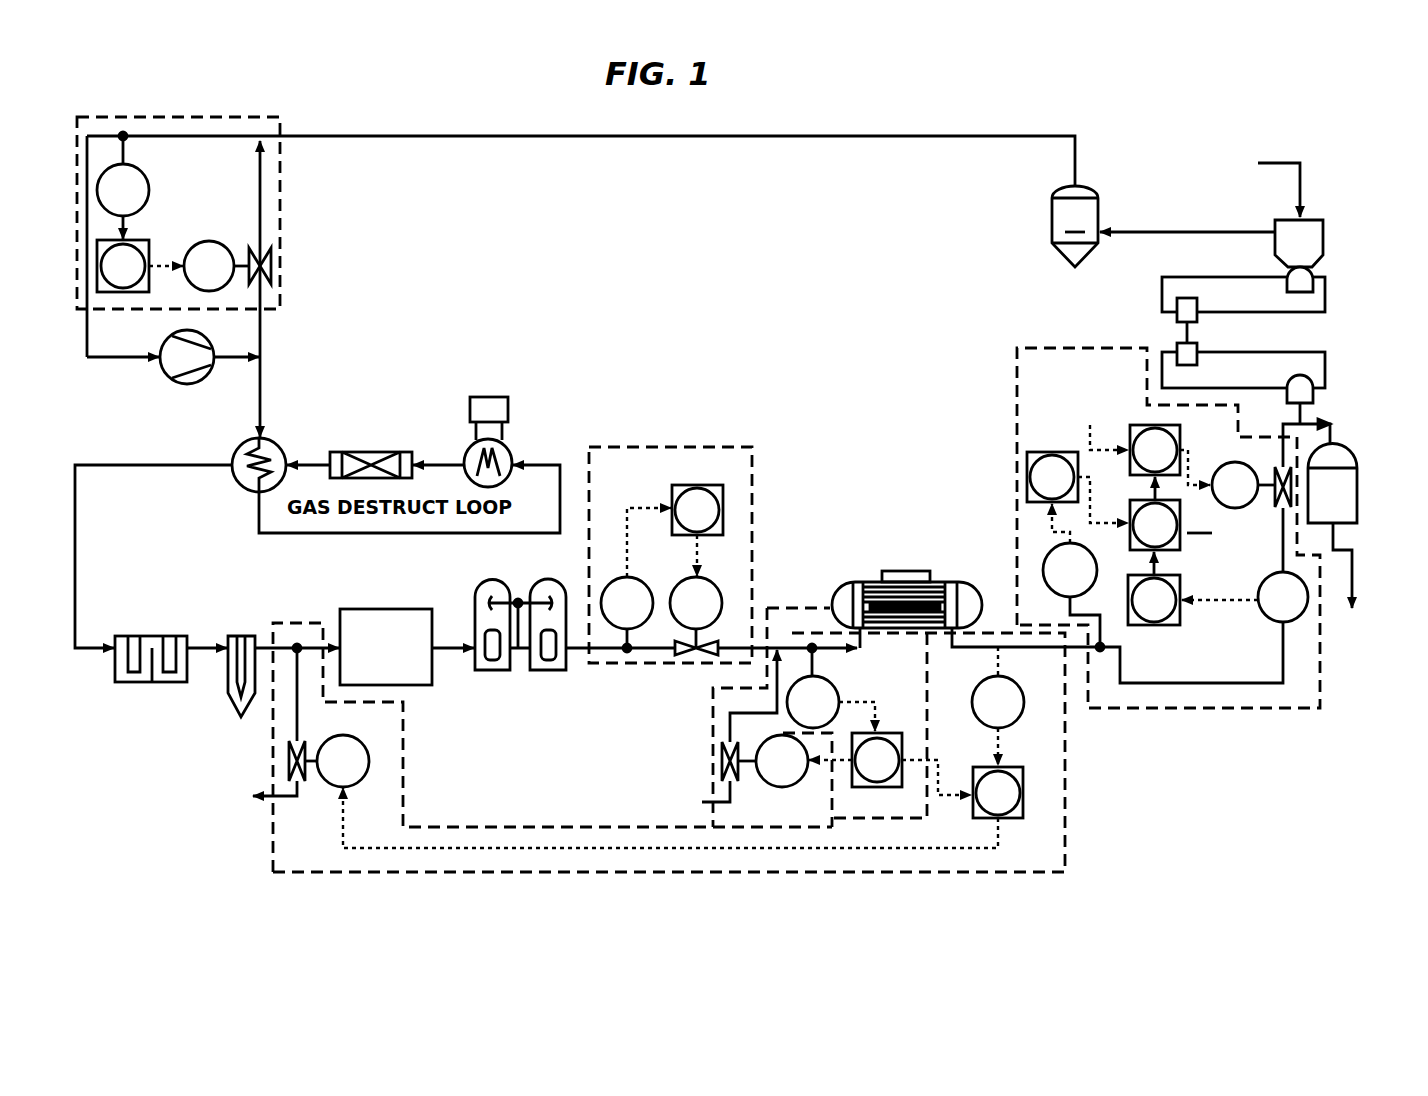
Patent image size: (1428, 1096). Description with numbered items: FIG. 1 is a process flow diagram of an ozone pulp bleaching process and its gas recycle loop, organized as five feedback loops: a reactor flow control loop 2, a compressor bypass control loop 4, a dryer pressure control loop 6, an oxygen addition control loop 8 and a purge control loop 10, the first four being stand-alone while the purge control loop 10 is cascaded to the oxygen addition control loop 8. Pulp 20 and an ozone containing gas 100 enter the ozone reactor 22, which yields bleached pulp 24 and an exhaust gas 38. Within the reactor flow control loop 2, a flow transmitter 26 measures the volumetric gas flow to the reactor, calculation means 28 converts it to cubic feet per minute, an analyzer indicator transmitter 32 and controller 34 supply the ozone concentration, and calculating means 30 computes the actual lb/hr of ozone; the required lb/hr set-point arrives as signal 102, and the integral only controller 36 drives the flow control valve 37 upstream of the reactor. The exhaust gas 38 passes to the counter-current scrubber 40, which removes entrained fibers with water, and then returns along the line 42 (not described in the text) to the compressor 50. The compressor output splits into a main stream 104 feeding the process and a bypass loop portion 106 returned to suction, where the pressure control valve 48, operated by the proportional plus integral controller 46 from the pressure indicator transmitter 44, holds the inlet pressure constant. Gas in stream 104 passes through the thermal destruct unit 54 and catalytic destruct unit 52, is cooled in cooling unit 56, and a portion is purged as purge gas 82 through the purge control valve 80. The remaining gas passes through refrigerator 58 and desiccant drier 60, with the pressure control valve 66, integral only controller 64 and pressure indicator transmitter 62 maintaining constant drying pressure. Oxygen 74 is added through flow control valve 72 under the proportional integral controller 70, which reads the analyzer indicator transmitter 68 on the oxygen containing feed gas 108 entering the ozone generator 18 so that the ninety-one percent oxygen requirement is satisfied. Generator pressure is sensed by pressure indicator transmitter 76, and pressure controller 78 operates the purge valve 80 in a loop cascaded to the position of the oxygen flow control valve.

The reactor flow control loop 2 is at (1077, 348).
The compressor bypass control loop 4 is at (283, 270).
The dryer pressure control loop 6 is at (768, 471).
The oxygen addition control loop 8 is at (785, 601).
The purge control loop 10 is at (1067, 777).
The ozone generator 18 is at (832, 580).
The pulp 20 is at (1302, 193).
The ozone reactor 22 is at (1294, 322).
The bleached pulp 24 is at (1353, 580).
The flow transmitter 26 is at (1267, 580).
The calculation means 28 is at (1180, 612).
The calculating means 30 is at (1130, 507).
The analyzer indicator transmitter 32 is at (1089, 557).
The controller 34 is at (1040, 502).
The integral only controller 36 is at (1180, 427).
The flow control valve 37 is at (1233, 508).
The exhaust gas 38 is at (1150, 232).
The counter-current scrubber 40 is at (1014, 226).
The recycle gas line 42 is at (697, 136).
The pressure indicator transmitter 44 is at (149, 194).
The proportional plus integral controller 46 is at (137, 292).
The pressure control valve 48 is at (213, 242).
The compressor 50 is at (173, 369).
The catalytic destruct unit 52 is at (362, 452).
The thermal destruct unit 54 is at (489, 397).
The cooling unit 56 is at (125, 682).
The refrigerator 58 is at (373, 609).
The desiccant drier 60 is at (490, 580).
The pressure indicator transmitter 62 is at (650, 565).
The integral only controller 64 is at (714, 485).
The pressure control valve 66 is at (713, 582).
The analyzer indicator transmitter 68 is at (836, 686).
The proportional integral controller 70 is at (887, 733).
The flow control valve 72 is at (790, 787).
The oxygen supply 74 is at (678, 731).
The pressure indicator transmitter 76 is at (1017, 686).
The pressure controller 78 is at (1012, 767).
The purge control valve 80 is at (343, 735).
The purge gas 82 is at (264, 806).
The ozone containing gas 100 is at (1332, 424).
The signal 102 is at (1089, 440).
The stream 104 is at (262, 399).
The bypass loop portion 106 is at (260, 200).
The oxygen containing feed gas 108 is at (787, 641).